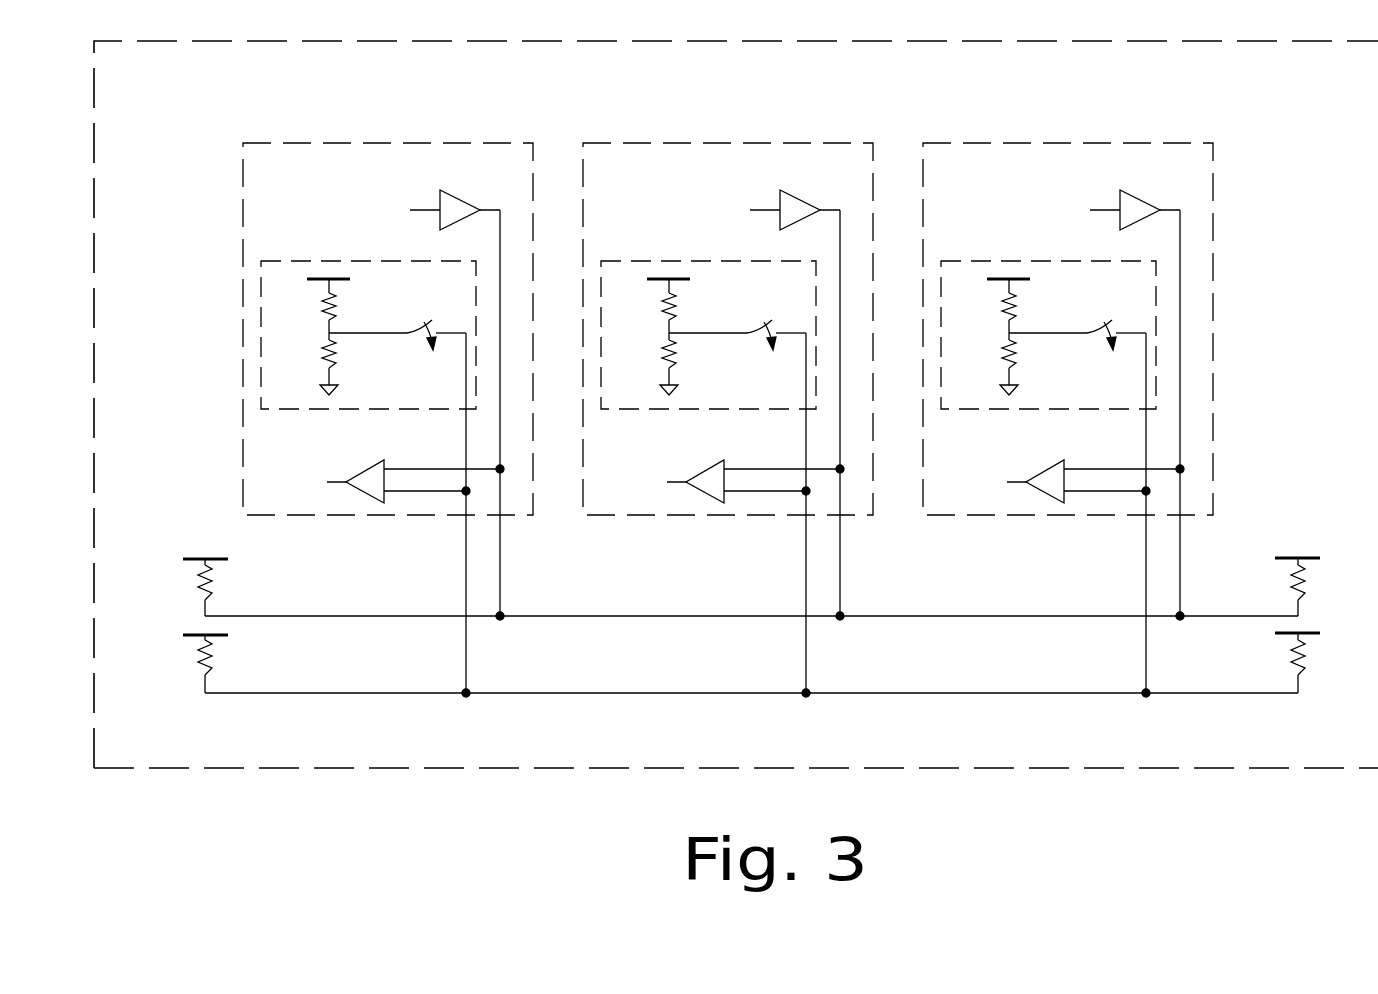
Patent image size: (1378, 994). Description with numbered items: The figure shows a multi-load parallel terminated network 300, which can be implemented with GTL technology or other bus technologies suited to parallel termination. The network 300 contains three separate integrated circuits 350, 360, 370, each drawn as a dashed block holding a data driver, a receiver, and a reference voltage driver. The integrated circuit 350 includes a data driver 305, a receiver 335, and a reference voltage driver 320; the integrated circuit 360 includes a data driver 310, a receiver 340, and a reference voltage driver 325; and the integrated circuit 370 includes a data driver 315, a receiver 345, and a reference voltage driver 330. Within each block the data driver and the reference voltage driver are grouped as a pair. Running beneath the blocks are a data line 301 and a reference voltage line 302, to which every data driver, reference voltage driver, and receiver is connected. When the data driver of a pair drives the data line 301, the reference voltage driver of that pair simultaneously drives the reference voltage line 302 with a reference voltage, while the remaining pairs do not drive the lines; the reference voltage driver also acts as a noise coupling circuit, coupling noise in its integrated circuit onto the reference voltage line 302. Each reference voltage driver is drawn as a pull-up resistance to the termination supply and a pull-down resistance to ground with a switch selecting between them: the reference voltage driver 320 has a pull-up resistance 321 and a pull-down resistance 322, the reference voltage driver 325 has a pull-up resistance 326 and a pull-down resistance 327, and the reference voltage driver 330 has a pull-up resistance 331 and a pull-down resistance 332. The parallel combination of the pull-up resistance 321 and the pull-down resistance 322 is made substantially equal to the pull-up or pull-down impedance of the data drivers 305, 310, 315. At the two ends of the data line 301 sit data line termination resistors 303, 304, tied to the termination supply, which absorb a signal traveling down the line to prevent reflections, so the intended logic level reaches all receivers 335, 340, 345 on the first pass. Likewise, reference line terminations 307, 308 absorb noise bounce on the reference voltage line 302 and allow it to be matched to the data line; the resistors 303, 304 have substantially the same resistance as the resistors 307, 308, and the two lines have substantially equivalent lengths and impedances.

The network 300 is at (380, 770).
The data line 301 is at (567, 616).
The reference voltage line 302 is at (567, 693).
The data line termination resistor 303 is at (214, 590).
The data line termination resistor 304 is at (1290, 590).
The data driver 305 is at (462, 198).
The reference line termination 307 is at (214, 665).
The reference line termination 308 is at (1290, 665).
The data driver 310 is at (809, 199).
The data driver 315 is at (1149, 199).
The reference voltage driver 320 is at (420, 262).
The pull-up resistance Rup" 321 is at (316, 295).
The pull-down resistance Rdn" 322 is at (316, 349).
The reference voltage driver 325 is at (717, 318).
The pull-up resistor Rup 326 is at (640, 298).
The pull-down resistor Rdn 327 is at (640, 349).
The reference voltage driver 330 is at (1057, 318).
The pull-up resistor Rup 331 is at (980, 298).
The pull-down resistor Rdn 332 is at (980, 349).
The receiver 335 is at (364, 470).
The receiver 340 is at (737, 473).
The receiver 345 is at (1077, 473).
The integrated circuit 350 is at (362, 143).
The integrated circuit 360 is at (728, 404).
The integrated circuit 370 is at (1068, 404).